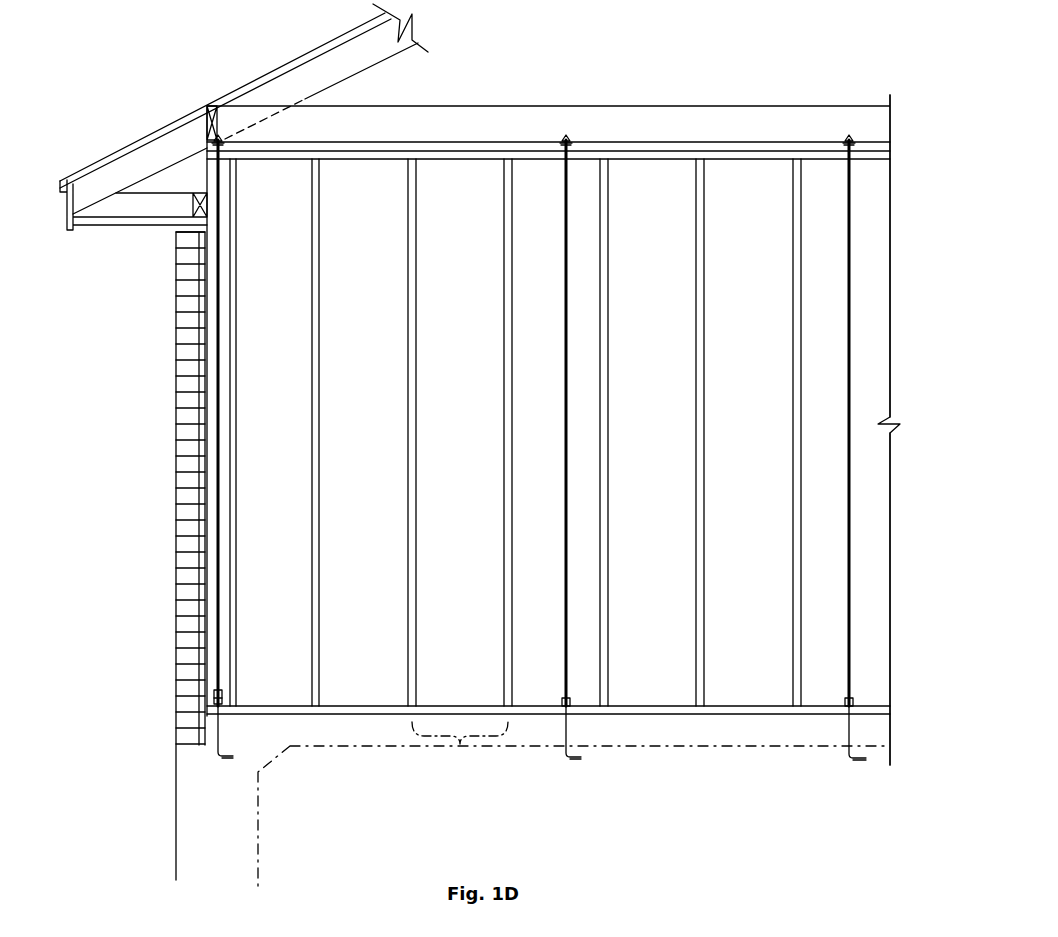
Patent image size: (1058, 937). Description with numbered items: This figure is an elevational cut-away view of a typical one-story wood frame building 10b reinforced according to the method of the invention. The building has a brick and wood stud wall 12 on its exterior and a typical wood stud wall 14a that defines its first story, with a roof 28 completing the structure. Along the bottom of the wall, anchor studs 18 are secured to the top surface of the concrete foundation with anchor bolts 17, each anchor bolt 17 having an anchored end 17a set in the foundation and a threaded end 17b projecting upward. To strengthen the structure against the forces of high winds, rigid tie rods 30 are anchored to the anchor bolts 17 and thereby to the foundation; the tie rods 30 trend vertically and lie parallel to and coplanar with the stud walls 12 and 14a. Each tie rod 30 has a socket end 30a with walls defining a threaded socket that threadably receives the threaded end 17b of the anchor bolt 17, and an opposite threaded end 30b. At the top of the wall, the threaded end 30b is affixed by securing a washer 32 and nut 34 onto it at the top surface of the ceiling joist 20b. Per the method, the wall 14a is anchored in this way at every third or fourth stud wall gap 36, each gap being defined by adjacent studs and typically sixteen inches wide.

The one-story wood frame building 10b is at (893, 516).
The brick and wood stud wall 12 is at (177, 503).
The wood stud wall 14a is at (867, 323).
The anchor bolt 17 is at (210, 744).
The anchored end 17a is at (230, 757).
The threaded end 17b is at (228, 707).
The anchor stud 18 is at (888, 712).
The ceiling joist 20b is at (897, 142).
The roof 28 is at (153, 131).
The tie rod 30 is at (222, 437).
The socket end 30a is at (215, 692).
The threaded end 30b is at (228, 103).
The washer 32 is at (563, 143).
The nut 34 is at (222, 137).
The stud wall gap 36 is at (460, 747).